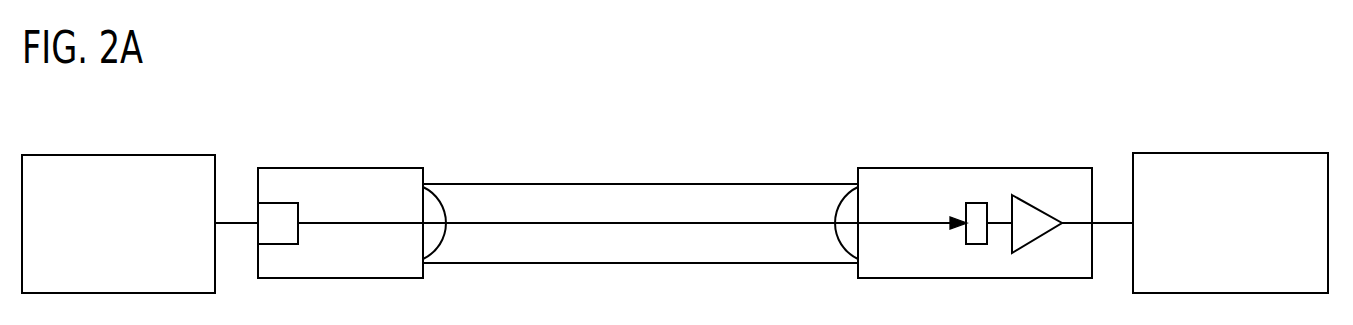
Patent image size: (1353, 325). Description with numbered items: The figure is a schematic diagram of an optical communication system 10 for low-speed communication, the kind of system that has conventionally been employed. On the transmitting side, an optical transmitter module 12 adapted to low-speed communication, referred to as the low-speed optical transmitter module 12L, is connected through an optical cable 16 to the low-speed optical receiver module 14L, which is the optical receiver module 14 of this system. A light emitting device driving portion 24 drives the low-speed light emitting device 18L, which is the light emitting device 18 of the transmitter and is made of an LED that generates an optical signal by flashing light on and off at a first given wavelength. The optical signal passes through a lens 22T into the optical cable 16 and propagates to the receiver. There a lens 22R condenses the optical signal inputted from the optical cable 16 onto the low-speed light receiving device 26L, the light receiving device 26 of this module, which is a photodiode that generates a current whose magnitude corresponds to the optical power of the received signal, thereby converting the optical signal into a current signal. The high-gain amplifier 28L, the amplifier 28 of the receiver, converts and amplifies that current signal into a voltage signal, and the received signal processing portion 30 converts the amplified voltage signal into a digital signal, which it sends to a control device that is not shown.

The optical communication system 10 is at (222, 90).
The light emitting device driving portion 24 is at (87, 154).
The low-speed optical transmitter module 12L is at (362, 211).
The optical transmitter module 12 is at (342, 215).
The low-speed light emitting device 18L is at (250, 178).
The light emitting device 18 is at (279, 203).
The lens 22T is at (447, 241).
The optical cable 16 is at (681, 184).
The lens 22R is at (835, 241).
The low-speed optical receiver module 14L is at (1070, 200).
The optical receiver module 14 is at (970, 206).
The low-speed light receiving device 26L is at (946, 181).
The light receiving element 26 is at (977, 203).
The high-gain amplifier 28L is at (1053, 173).
The amplifier 28 is at (1029, 204).
The received signal processing portion 30 is at (1174, 153).